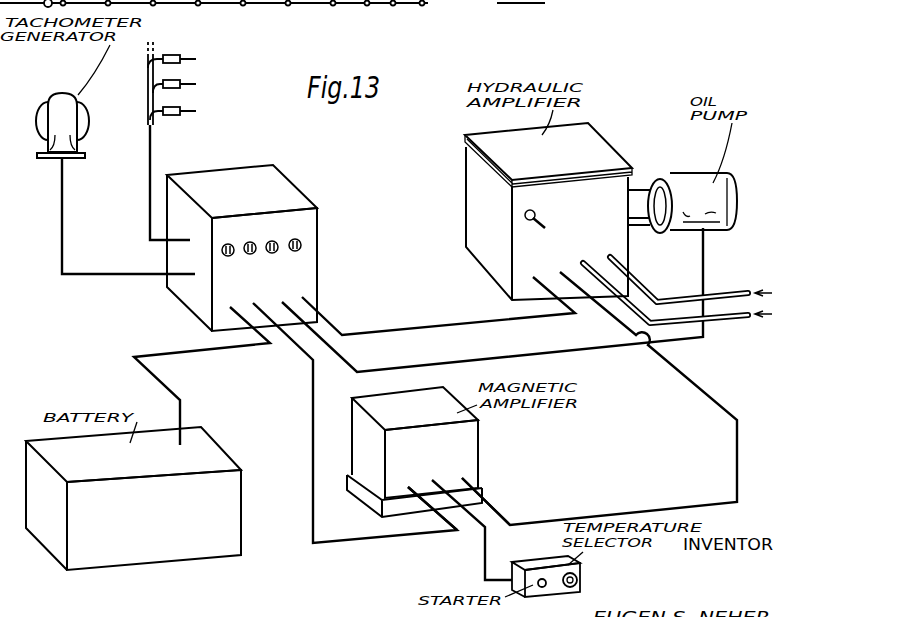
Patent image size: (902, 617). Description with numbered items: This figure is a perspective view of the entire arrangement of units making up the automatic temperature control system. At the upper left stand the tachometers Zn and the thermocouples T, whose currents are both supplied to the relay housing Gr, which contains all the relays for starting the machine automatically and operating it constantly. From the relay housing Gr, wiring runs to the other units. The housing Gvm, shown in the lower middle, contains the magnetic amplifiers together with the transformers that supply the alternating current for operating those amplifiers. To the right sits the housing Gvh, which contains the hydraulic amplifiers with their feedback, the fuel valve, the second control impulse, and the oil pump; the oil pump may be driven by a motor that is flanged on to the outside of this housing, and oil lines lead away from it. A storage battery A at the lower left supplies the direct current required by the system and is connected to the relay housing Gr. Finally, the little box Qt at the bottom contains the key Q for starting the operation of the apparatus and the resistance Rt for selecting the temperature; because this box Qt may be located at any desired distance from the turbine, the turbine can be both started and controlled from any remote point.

The tachometers Zn is at (58, 103).
The thermocouples T is at (200, 59).
The relay housing Gr is at (242, 248).
The hydraulic amplifier housing Gvh is at (548, 211).
The magnetic amplifier housing Gvm is at (428, 458).
The storage battery A is at (133, 498).
The control box Qt is at (542, 559).
The key Q is at (542, 588).
The resistance Rt is at (577, 581).